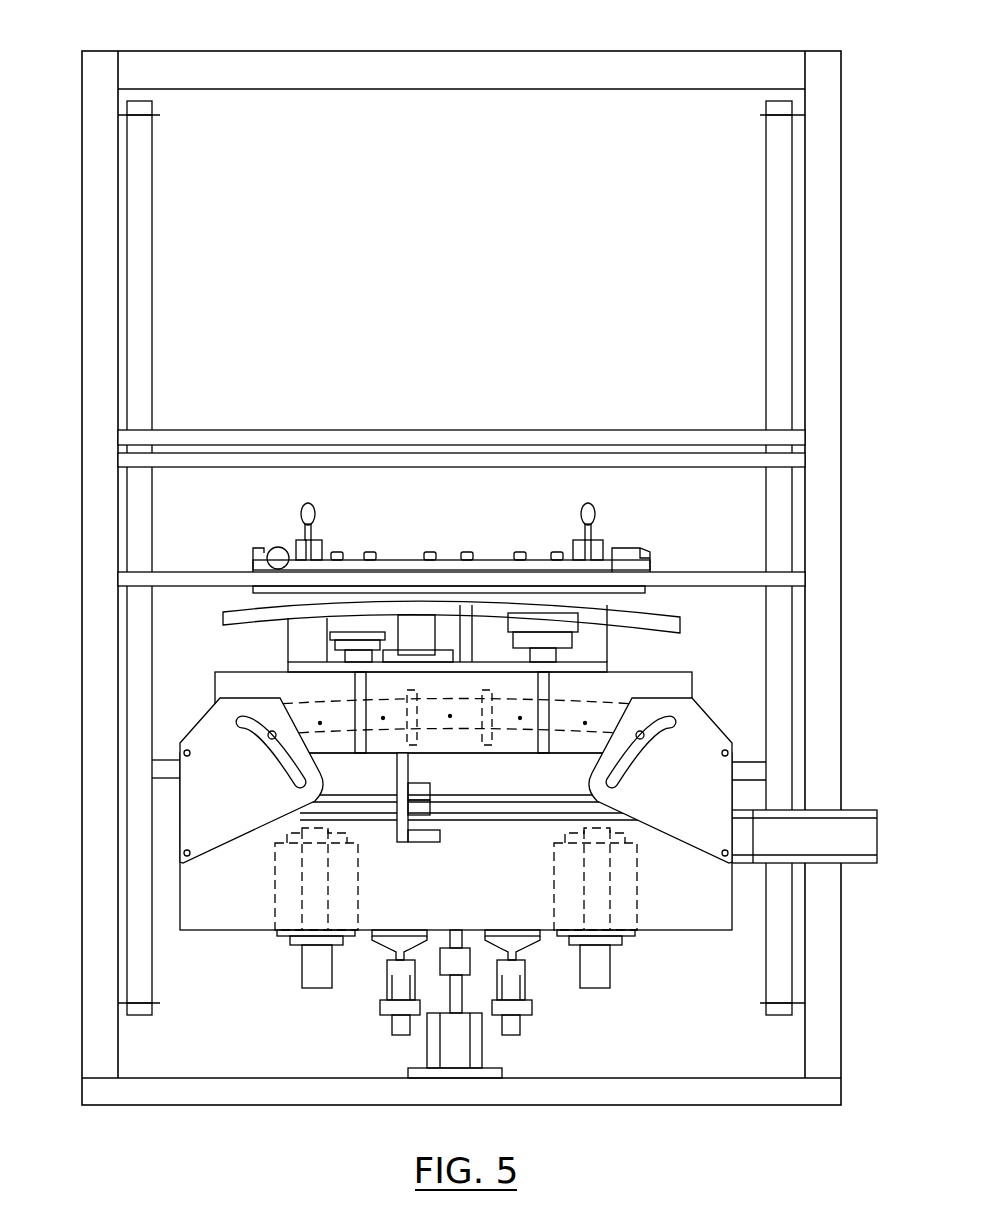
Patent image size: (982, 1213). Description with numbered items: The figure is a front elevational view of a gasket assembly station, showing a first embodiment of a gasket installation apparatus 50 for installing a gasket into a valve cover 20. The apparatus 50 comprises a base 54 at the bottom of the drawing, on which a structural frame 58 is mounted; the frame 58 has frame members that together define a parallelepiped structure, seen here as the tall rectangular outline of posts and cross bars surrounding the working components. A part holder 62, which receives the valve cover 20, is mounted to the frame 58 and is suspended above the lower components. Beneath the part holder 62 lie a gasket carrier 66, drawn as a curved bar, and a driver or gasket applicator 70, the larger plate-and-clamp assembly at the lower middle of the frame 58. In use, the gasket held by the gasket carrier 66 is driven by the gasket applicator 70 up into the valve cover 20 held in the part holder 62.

The gasket installation apparatus 50 is at (714, 1124).
The structural frame 58 is at (497, 78).
The base 54 is at (223, 1097).
The valve cover 20 is at (401, 553).
The part holder 62 is at (664, 531).
The gasket carrier 66 is at (690, 625).
The gasket applicator 70 is at (724, 700).